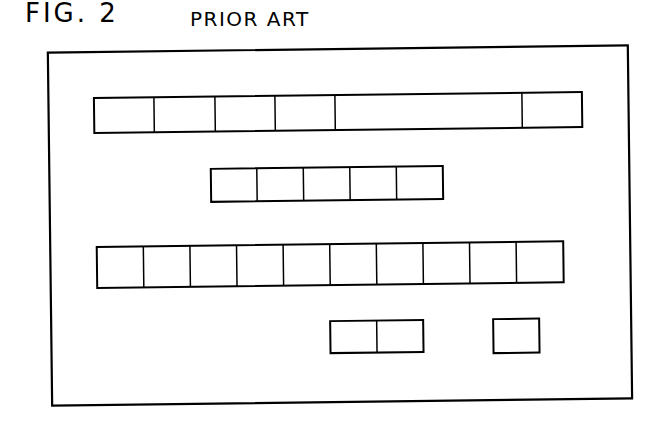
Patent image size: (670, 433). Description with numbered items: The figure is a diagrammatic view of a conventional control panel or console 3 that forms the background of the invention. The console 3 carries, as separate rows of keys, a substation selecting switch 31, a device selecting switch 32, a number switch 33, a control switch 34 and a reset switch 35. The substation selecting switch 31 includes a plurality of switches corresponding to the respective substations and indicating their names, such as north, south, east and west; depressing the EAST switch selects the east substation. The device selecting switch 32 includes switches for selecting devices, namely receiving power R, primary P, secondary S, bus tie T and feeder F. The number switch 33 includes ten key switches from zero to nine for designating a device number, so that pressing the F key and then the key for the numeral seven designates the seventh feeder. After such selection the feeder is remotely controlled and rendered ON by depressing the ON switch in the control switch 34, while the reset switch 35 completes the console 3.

The console 3 is at (516, 55).
The substation selecting switch 31 is at (526, 92).
The device selecting switch 32 is at (450, 186).
The number switch 33 is at (532, 238).
The control switch 34 is at (325, 349).
The reset switch 35 is at (539, 331).